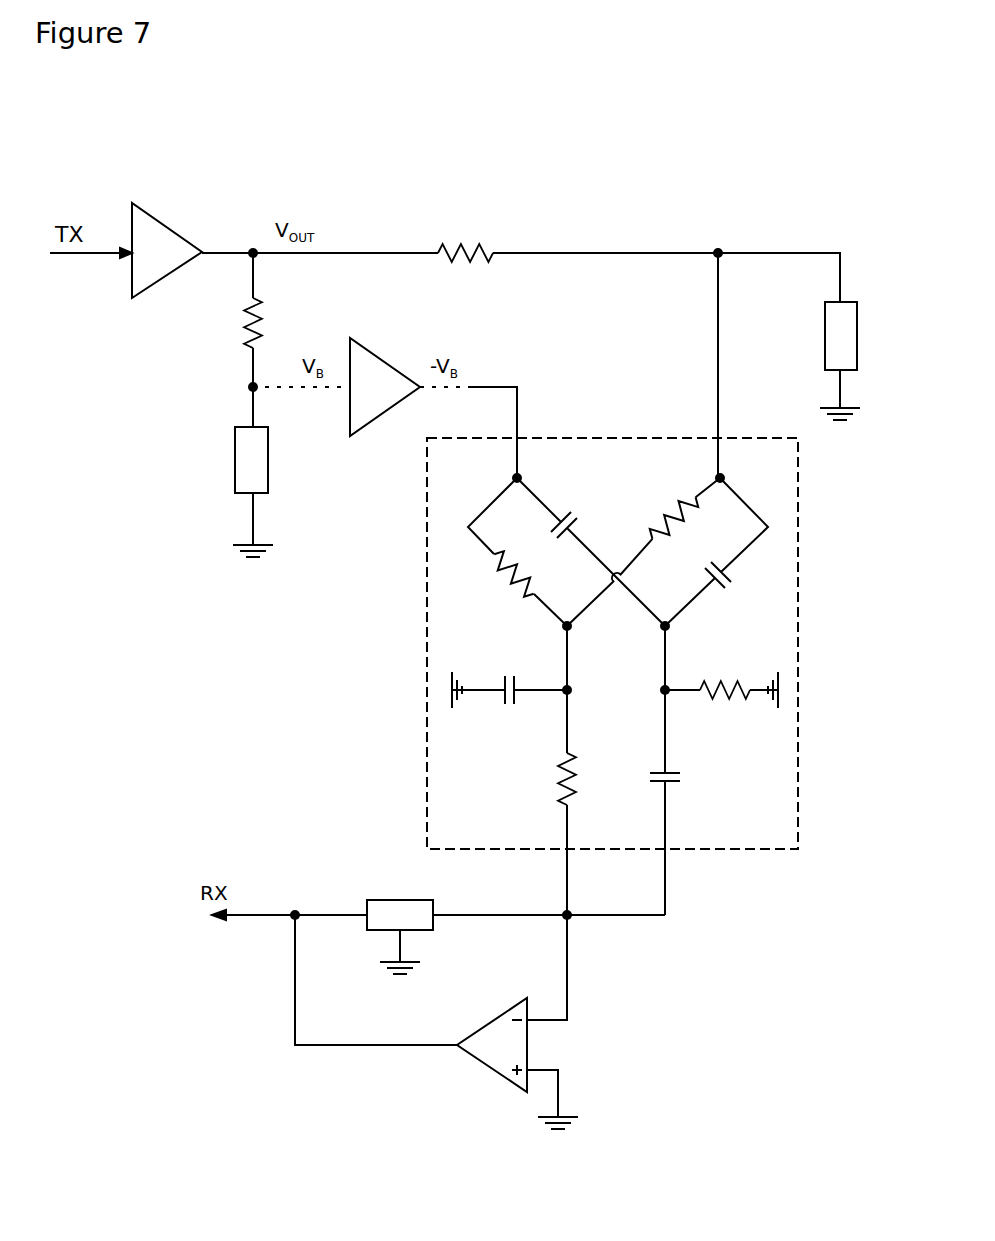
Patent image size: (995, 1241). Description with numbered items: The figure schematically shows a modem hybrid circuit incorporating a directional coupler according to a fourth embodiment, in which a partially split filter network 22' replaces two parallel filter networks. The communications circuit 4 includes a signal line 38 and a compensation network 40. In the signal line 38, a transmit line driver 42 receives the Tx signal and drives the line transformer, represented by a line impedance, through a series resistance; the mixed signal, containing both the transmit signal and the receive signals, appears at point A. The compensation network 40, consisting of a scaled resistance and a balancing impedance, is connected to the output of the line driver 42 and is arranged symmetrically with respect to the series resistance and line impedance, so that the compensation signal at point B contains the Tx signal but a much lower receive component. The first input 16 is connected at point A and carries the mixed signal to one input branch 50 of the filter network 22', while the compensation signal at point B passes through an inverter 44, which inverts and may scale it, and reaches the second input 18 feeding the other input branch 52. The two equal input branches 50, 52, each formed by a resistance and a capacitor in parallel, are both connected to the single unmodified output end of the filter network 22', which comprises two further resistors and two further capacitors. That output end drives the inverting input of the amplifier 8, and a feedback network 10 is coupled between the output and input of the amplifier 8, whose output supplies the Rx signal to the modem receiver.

The transmit line driver 42 is at (155, 218).
The signal line 38 is at (585, 253).
The communications circuit 4 is at (778, 191).
The first input 16 is at (716, 408).
The compensation network 40 is at (160, 398).
The inverter 44 is at (378, 357).
The second input 18 is at (515, 404).
The partially split filter network 22' is at (609, 676).
The input branch 52 is at (412, 478).
The input branch 50 is at (813, 480).
The feedback network 10 is at (372, 900).
The amplifier 8 is at (477, 1062).